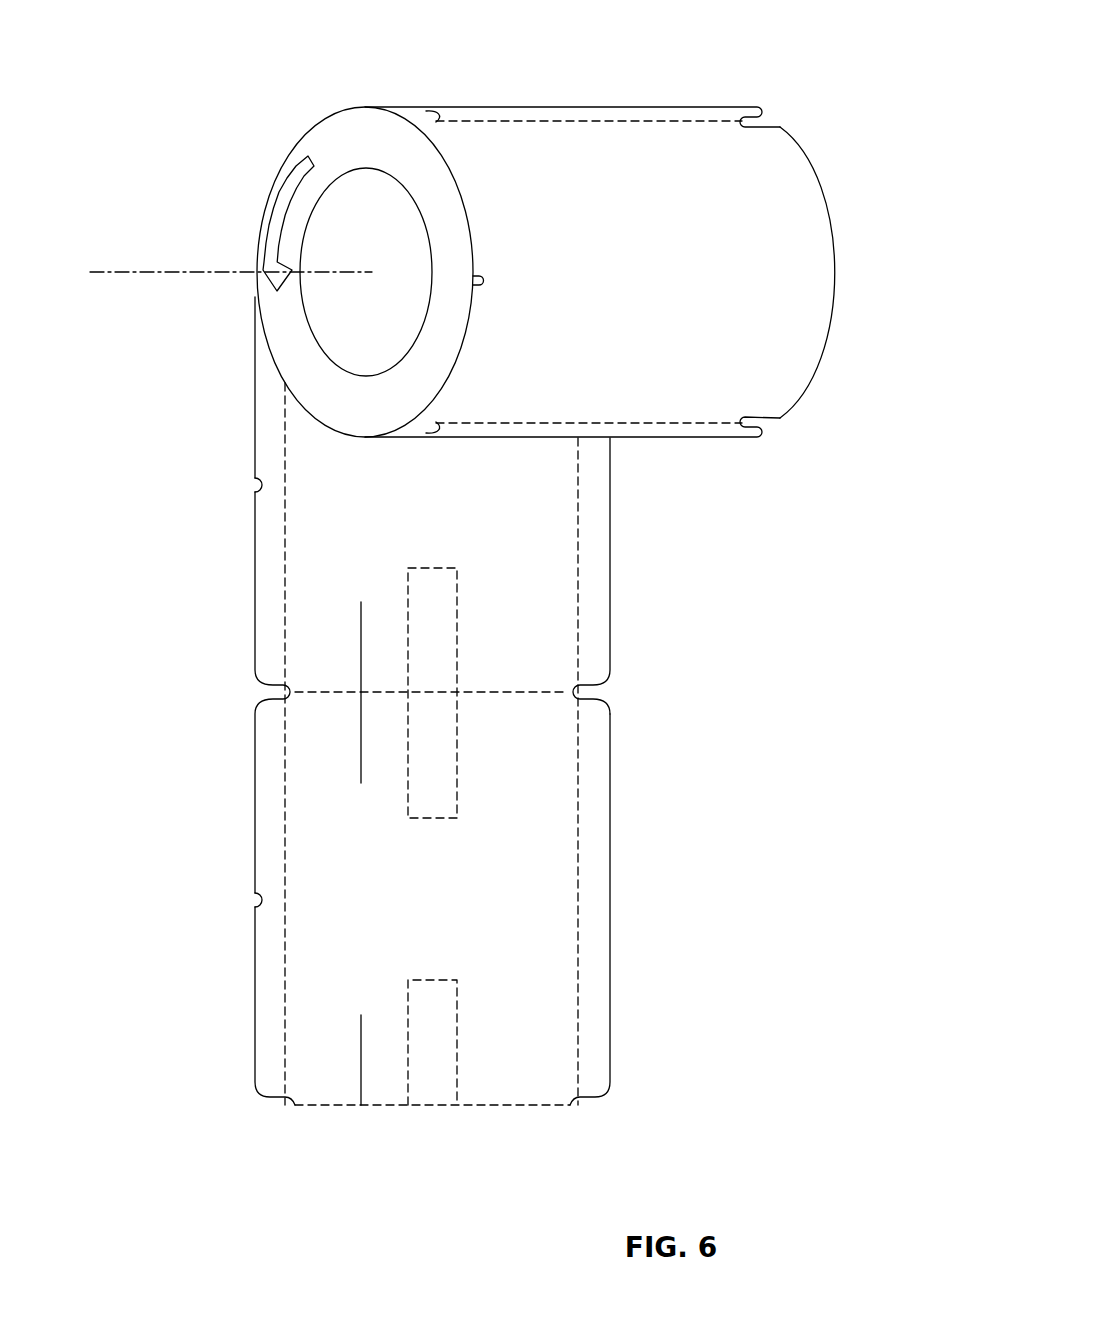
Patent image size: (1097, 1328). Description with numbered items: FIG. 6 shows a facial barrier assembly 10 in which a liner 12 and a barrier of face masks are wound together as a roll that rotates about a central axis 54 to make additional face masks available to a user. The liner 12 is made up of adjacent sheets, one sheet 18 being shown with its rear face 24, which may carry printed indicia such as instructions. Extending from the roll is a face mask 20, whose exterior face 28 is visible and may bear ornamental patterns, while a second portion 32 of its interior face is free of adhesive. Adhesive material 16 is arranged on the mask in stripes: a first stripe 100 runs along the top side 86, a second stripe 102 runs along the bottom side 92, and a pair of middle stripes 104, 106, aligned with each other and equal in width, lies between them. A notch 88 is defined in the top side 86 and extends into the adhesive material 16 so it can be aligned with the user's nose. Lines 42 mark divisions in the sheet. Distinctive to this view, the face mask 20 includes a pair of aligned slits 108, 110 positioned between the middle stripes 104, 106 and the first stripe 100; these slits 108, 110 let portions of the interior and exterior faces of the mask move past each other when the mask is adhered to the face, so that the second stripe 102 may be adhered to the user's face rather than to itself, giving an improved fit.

The facial barrier assembly 10 is at (834, 29).
The liner 12 is at (798, 244).
The adhesive material 16 is at (594, 990).
The sheet 18 is at (766, 323).
The face mask 20 is at (553, 765).
The rear face 24 is at (777, 168).
The exterior face 28 is at (315, 505).
The second portion 32 is at (525, 833).
The fold lines 42 is at (632, 122).
The central axis 54 is at (131, 280).
The top side 86 is at (255, 823).
The notch 88 is at (243, 901).
The bottom side 92 is at (612, 908).
The first stripe 100 is at (268, 605).
The second stripe 102 is at (593, 857).
The middle stripe 104 is at (438, 745).
The middle stripe 106 is at (438, 592).
The slit 108 is at (370, 618).
The slit 110 is at (346, 728).